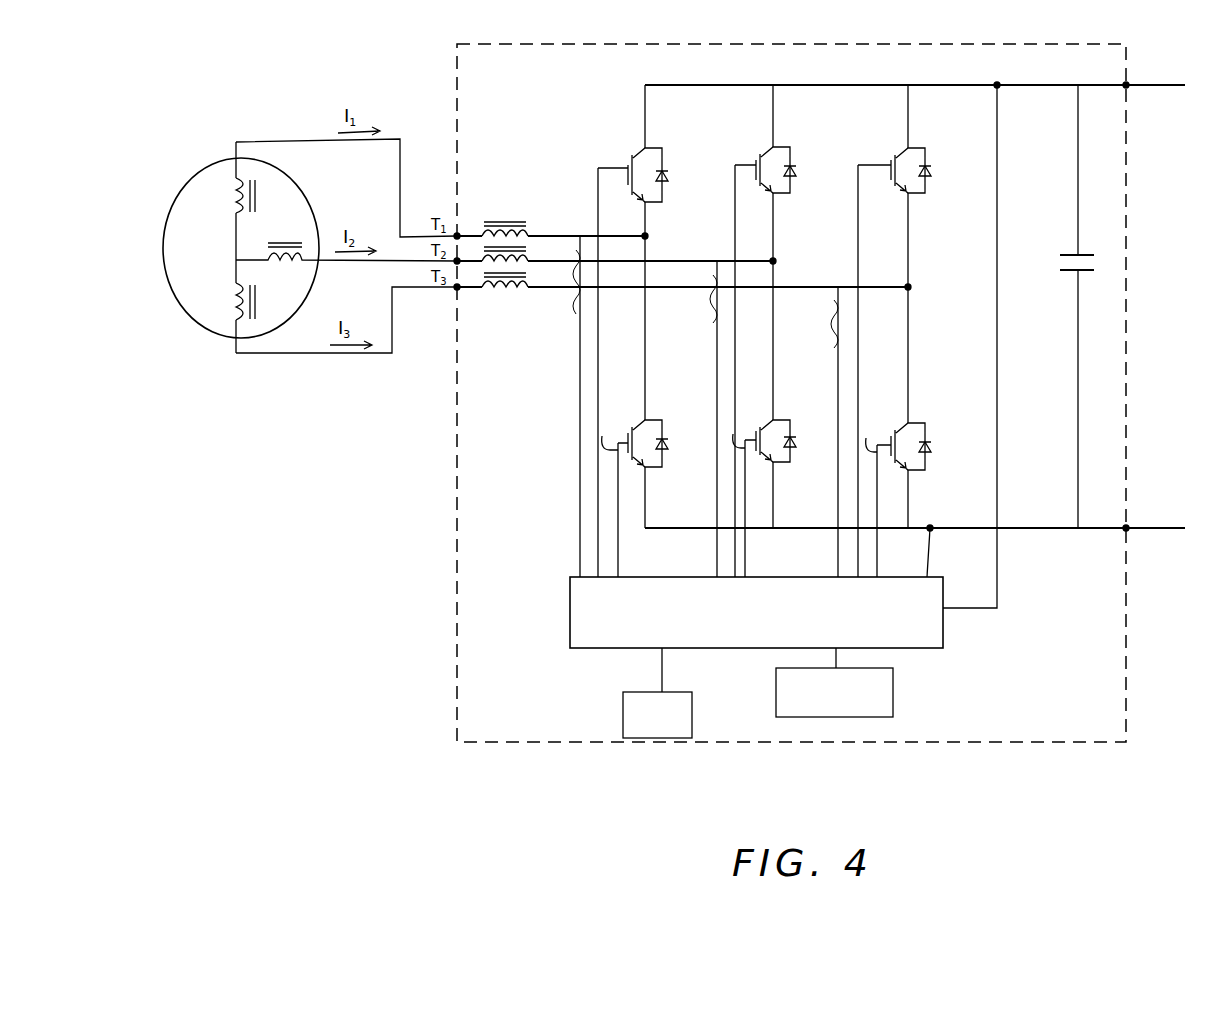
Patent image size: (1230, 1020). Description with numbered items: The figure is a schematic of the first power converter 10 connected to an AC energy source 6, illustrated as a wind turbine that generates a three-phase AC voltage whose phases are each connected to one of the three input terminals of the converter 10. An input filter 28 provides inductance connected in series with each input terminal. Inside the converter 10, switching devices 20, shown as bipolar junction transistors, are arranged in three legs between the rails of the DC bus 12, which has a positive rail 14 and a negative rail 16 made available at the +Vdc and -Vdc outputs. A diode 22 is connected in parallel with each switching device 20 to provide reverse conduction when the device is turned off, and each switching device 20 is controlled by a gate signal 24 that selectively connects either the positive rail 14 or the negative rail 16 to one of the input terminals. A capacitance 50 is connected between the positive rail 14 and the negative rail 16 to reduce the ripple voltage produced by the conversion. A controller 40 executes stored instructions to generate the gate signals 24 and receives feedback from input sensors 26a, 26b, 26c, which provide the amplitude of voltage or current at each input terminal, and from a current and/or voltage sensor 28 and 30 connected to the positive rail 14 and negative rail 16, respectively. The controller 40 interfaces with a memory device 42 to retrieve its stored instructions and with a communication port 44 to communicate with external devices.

The energy source 6 is at (210, 348).
The first power converter 10 is at (456, 100).
The DC bus 12 is at (1052, 84).
The positive rail 14 is at (1100, 92).
The negative rail 16 is at (1100, 532).
The switching devices 20 is at (633, 145).
The diode 22 is at (675, 165).
The gate signal 24 is at (743, 371).
The input sensor 26a is at (580, 236).
The input sensor 26b is at (717, 261).
The input sensor 26c is at (838, 287).
The input filter 28 is at (505, 212).
The current and/or voltage sensor 30 is at (934, 525).
The controller 40 is at (866, 631).
The memory device 42 is at (893, 706).
The communication port 44 is at (692, 722).
The capacitance 50 is at (1088, 252).